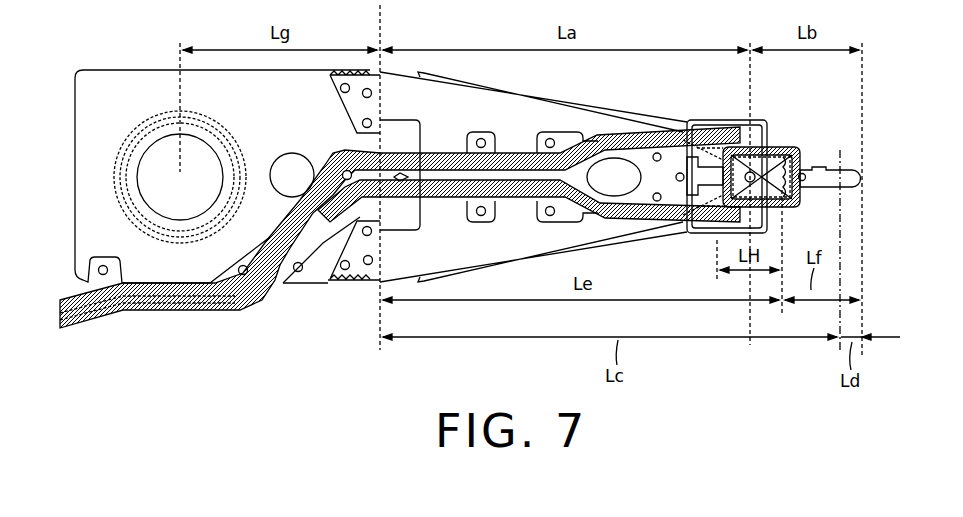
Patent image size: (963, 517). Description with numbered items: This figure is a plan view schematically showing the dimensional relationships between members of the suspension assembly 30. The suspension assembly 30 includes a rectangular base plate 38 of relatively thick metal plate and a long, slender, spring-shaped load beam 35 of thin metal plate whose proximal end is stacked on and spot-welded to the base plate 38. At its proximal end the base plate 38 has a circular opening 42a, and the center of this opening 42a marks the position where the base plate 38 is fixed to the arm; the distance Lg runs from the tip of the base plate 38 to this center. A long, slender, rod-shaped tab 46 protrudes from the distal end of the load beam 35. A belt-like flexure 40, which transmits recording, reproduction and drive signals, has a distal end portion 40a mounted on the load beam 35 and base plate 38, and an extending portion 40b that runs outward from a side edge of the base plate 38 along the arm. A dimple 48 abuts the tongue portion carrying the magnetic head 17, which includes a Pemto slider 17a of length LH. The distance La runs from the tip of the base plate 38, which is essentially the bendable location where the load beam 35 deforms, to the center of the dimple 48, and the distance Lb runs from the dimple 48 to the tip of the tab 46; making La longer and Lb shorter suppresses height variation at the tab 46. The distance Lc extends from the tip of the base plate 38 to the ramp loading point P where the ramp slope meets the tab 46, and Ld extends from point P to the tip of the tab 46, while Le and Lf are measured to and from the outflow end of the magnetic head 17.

The base plate 38 is at (101, 72).
The circular opening 42a is at (160, 152).
The suspension assembly 30 is at (344, 307).
The load beam 35 is at (503, 112).
The flexure 40 is at (400, 218).
The distal end portion 40a is at (443, 199).
The extending portion 40b is at (142, 310).
The magnetic head 17 is at (717, 123).
The dimple 48 is at (770, 150).
The Pemto slider 17a is at (773, 157).
The tab 46 is at (857, 187).
The ramp loading point P is at (843, 170).